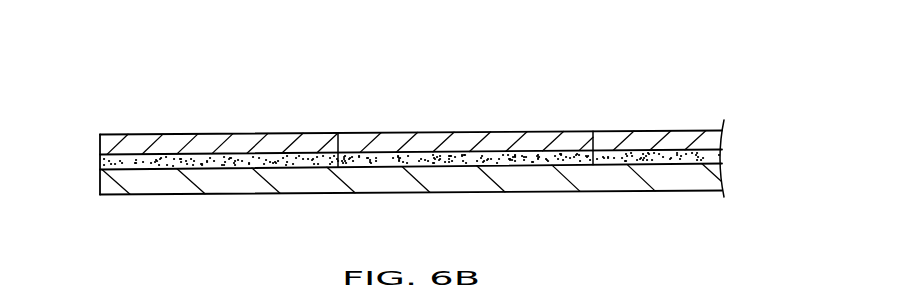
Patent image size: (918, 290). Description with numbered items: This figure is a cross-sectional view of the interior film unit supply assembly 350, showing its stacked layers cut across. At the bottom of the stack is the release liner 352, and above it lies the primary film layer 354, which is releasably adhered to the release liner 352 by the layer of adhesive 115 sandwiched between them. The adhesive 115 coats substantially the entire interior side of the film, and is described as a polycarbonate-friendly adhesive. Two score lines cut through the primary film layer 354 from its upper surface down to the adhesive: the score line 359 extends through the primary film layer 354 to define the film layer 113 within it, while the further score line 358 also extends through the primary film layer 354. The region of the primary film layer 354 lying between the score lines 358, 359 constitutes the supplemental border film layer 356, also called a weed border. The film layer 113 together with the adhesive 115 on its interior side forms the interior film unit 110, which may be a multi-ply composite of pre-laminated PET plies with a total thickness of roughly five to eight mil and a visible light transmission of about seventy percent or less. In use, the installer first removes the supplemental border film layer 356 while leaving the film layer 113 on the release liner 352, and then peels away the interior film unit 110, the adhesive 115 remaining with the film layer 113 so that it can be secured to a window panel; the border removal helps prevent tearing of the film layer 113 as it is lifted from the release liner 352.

The interior film unit supply assembly 350 is at (460, 62).
The release liner 352 is at (392, 183).
The primary film layer 354 is at (88, 156).
The supplemental border film layer 356 is at (393, 135).
The further score line 358 is at (337, 140).
The score line 359 is at (593, 142).
The interior film unit 110 is at (723, 113).
The film layer 113 is at (610, 137).
The adhesive 115 is at (715, 159).